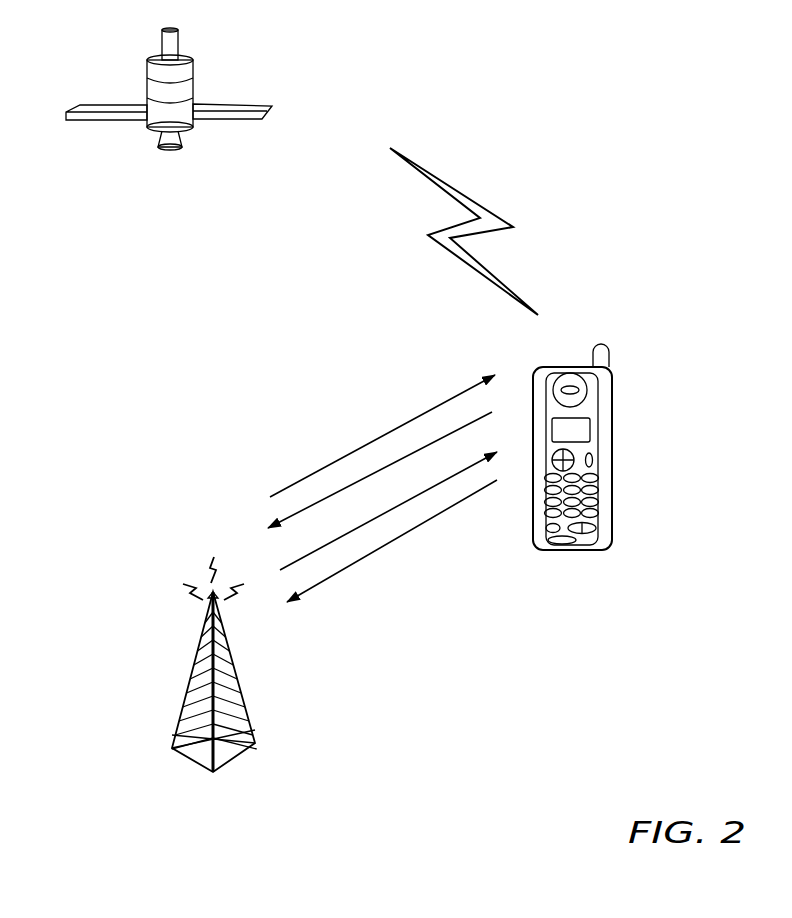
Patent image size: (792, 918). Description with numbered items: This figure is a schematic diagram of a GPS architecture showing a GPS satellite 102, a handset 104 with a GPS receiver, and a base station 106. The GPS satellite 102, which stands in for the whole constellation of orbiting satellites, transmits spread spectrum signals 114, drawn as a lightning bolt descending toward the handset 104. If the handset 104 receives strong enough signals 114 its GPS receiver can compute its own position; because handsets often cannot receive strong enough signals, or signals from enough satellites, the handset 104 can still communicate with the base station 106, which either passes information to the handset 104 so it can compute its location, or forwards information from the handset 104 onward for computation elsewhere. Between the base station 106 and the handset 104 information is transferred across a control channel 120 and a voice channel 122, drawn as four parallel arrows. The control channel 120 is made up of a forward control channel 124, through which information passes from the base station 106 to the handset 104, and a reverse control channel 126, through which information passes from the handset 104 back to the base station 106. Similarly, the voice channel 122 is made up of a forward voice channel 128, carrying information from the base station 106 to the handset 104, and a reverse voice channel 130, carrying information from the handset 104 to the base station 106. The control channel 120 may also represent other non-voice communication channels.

The GPS satellite 102 is at (232, 108).
The handset 104 is at (612, 448).
The base station 106 is at (248, 713).
The spread spectrum signals 114 is at (447, 182).
The control channel 120 is at (328, 418).
The voice channel 122 is at (385, 568).
The forward control channel 124 is at (288, 487).
The reverse control channel 126 is at (293, 517).
The forward voice channel 128 is at (297, 557).
The reverse voice channel 130 is at (302, 588).